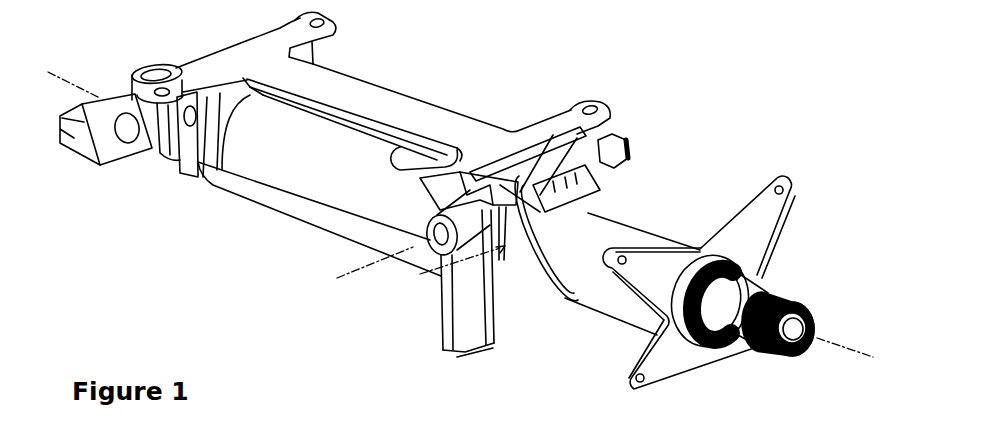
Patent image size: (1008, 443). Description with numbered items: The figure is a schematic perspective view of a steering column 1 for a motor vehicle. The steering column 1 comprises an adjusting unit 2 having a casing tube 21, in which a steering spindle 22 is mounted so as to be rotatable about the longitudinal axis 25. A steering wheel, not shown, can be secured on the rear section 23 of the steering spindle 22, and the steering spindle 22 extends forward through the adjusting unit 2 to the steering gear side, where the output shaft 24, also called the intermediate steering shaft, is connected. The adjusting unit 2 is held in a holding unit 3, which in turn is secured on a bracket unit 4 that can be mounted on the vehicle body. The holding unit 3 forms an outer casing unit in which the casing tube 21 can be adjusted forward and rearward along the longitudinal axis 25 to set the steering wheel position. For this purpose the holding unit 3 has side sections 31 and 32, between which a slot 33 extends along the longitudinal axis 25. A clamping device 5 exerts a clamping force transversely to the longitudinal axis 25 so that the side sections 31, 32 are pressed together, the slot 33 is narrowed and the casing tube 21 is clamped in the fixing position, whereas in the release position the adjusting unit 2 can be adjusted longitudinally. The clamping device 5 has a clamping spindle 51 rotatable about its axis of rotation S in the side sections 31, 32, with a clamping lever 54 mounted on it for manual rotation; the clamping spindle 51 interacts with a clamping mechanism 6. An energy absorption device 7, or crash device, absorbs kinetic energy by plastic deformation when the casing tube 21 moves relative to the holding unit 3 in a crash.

The steering column 1 is at (470, 62).
The adjusting unit 2 is at (675, 220).
The holding unit 3 is at (307, 172).
The bracket unit 4 is at (355, 98).
The clamping device 5 is at (423, 250).
The clamping mechanism 6 is at (522, 298).
The energy absorption device 7 is at (565, 232).
The casing tube 21 is at (605, 227).
The steering spindle 22 is at (737, 318).
The section 23 is at (768, 343).
The output shaft 24 is at (76, 132).
The longitudinal axis 25 is at (860, 350).
The side section 31 is at (517, 197).
The side section 32 is at (577, 163).
The slot 33 is at (538, 177).
The clamping spindle 51 is at (438, 247).
The clamping lever 54 is at (465, 317).
The axis of rotation S is at (373, 262).